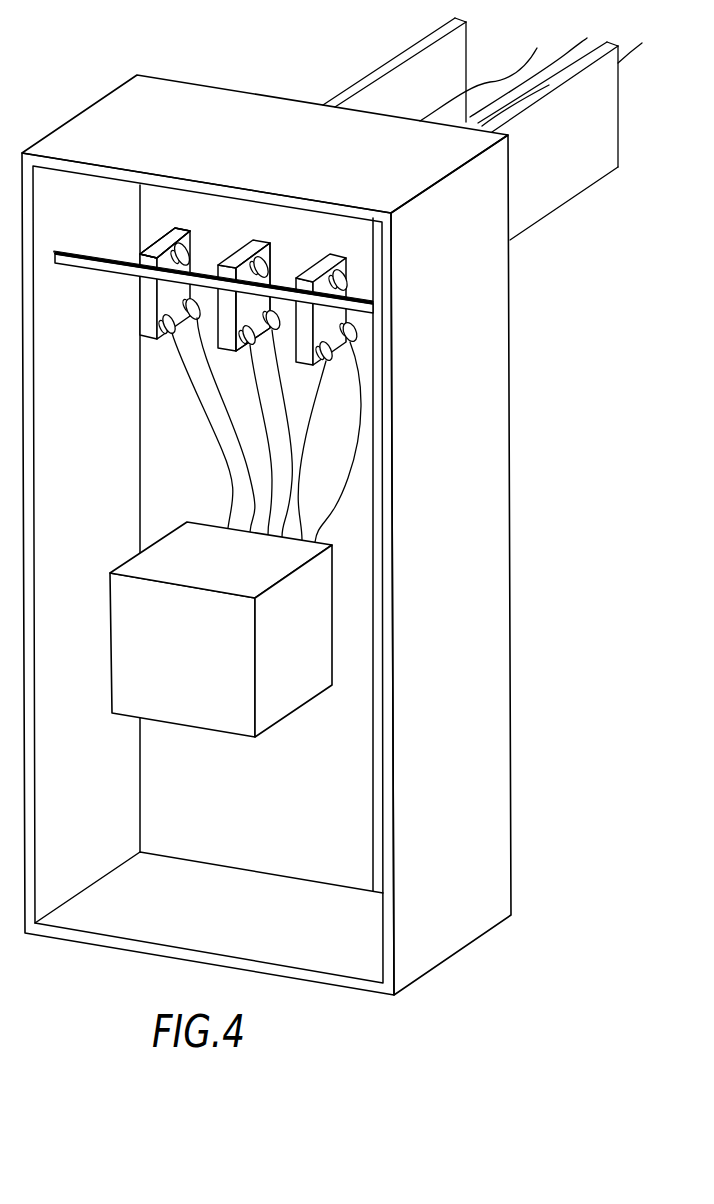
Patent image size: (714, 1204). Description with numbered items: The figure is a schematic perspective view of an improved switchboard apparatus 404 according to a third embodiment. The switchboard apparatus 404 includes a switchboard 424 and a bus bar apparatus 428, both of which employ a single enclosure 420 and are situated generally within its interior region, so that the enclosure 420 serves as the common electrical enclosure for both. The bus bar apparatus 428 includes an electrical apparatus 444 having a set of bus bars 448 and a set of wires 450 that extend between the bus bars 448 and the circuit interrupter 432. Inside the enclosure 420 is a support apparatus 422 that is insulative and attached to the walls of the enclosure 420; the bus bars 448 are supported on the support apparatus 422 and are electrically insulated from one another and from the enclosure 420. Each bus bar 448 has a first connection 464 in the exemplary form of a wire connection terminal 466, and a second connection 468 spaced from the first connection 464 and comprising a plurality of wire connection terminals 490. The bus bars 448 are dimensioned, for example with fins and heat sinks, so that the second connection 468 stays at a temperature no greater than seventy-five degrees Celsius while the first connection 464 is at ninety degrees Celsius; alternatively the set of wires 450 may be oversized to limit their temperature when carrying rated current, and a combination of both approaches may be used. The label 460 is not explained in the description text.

The switchboard apparatus 404 is at (333, 506).
The enclosure 420 is at (510, 583).
The support apparatus 422 is at (82, 268).
The switchboard 424 is at (515, 696).
The bus bar apparatus 428 is at (165, 227).
The circuit interrupter 432 is at (197, 730).
The electrical apparatus 444 is at (147, 230).
The bus bars 448 is at (140, 248).
The wires 450 is at (268, 462).
The connector housing 460 is at (272, 265).
The first connection 464 is at (177, 250).
The wire connection terminal 466 is at (231, 262).
The second connection 468 is at (185, 300).
The wire connection terminals 490 is at (260, 350).